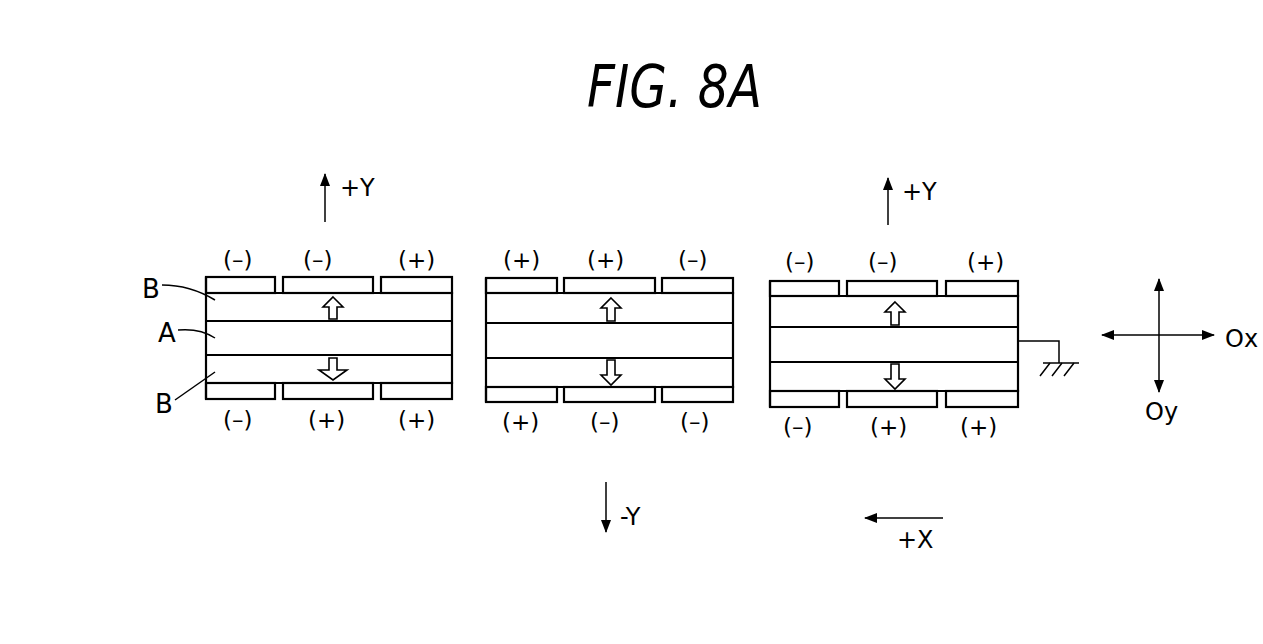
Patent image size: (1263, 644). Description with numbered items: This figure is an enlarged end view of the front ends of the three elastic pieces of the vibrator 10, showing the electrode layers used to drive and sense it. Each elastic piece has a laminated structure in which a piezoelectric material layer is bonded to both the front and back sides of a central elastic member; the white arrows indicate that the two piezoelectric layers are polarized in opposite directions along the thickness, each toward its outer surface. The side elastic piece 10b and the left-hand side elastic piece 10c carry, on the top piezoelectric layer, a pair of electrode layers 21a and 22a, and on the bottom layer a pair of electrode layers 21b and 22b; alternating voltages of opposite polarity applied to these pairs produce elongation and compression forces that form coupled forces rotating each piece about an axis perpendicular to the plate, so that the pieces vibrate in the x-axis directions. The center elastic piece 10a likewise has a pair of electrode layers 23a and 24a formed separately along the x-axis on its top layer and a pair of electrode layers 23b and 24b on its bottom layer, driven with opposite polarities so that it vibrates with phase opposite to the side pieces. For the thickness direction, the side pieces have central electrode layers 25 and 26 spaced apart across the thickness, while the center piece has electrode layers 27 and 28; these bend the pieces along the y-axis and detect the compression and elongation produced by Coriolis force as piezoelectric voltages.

The vibrator 10 is at (682, 187).
The elastic piece 10a is at (725, 410).
The elastic piece 10b is at (1027, 293).
The elastic piece 10c is at (200, 365).
The electrode layer 21a is at (442, 287).
The electrode layer 21b is at (393, 393).
The electrode layer 22a is at (215, 286).
The electrode layer 22b is at (215, 393).
The electrode layer 23a is at (548, 285).
The electrode layer 23b is at (492, 402).
The electrode layer 24a is at (670, 287).
The electrode layer 24b is at (667, 402).
The electrode layer 25 is at (295, 393).
The electrode layer 26 is at (293, 287).
The electrode layer 27 is at (642, 285).
The electrode layer 28 is at (577, 402).